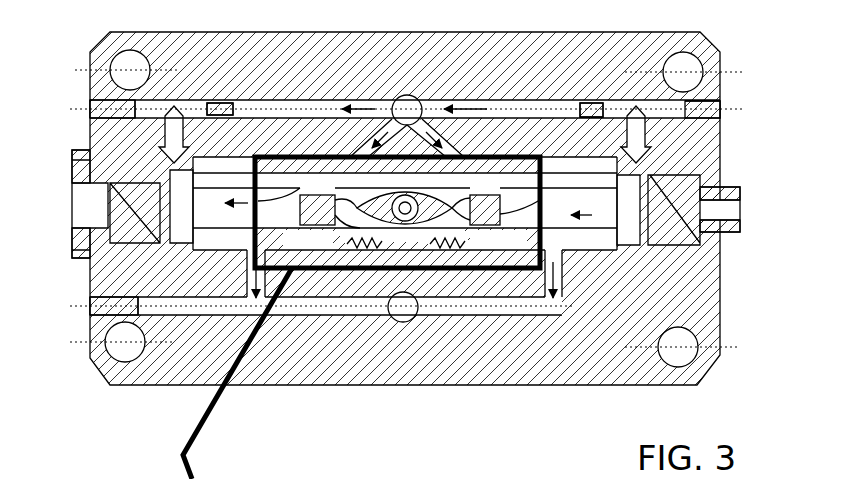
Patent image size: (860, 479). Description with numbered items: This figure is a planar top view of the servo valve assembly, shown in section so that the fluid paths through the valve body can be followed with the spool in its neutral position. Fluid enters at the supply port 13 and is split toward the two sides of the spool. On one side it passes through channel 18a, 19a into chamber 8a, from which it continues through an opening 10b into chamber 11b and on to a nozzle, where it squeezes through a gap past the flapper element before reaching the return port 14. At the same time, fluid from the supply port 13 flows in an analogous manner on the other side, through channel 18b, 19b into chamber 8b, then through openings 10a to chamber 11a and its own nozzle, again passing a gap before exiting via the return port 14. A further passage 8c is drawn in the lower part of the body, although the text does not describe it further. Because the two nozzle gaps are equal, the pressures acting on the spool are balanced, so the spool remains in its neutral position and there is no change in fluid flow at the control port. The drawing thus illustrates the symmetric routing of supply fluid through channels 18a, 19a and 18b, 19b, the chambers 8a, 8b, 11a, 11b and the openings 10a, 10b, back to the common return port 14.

The chamber 8a is at (598, 227).
The chamber 8b is at (217, 214).
The third passage 8c is at (528, 311).
The first valve seat 10a is at (452, 225).
The opening 10b is at (345, 235).
The chamber 11a is at (462, 225).
The chamber 11b is at (352, 215).
The supply port 13 is at (410, 96).
The return port 14 is at (409, 321).
The channel 18a is at (561, 103).
The channel 18b is at (261, 103).
The channel 19a is at (650, 140).
The channel 19b is at (158, 139).